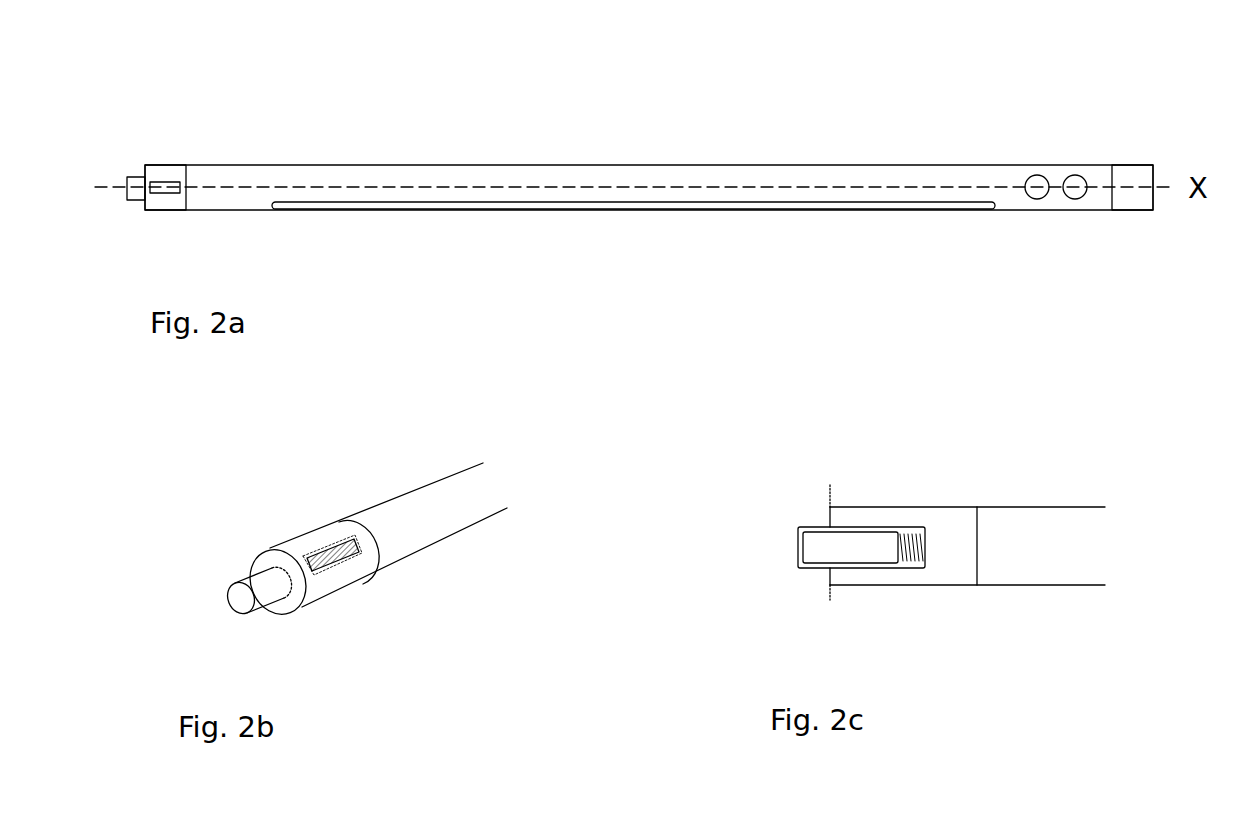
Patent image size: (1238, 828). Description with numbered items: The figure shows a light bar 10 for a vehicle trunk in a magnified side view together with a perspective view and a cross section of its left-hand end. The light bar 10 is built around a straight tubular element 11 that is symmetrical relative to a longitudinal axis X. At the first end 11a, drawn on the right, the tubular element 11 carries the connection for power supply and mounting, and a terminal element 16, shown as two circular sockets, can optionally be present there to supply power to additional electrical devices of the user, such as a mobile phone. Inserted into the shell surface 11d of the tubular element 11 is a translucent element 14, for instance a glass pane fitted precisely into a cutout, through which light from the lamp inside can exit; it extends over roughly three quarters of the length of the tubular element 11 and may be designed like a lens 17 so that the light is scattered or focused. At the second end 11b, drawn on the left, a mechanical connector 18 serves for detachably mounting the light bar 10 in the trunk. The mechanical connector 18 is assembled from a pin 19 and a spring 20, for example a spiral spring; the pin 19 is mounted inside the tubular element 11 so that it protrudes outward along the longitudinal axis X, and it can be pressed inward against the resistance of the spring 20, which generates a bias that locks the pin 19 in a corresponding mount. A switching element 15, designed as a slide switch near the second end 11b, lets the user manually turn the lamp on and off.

In FIG. 2A, the light bar 10 is at (777, 117).
In FIG. 2A, the tubular element 11 is at (462, 165).
In FIG. 2A, the first end of the tubular element 11a is at (1118, 152).
In FIG. 2A, the second end of the tubular element 11b is at (162, 145).
In FIG. 2B, the second end of the tubular element 11b is at (308, 500).
In FIG. 2C, the second end of the tubular element 11b is at (900, 480).
In FIG. 2A, the shell surface of the tubular element 11d is at (685, 177).
In FIG. 2A, the translucent element 14 is at (760, 220).
In FIG. 2A, the lens 17 is at (633, 205).
In FIG. 2A, the switching element 15 is at (172, 192).
In FIG. 2B, the switching element 15 is at (357, 553).
In FIG. 2A, the terminal element 16 is at (1040, 192).
In FIG. 2B, the mechanical connector 18 is at (252, 540).
In FIG. 2B, the pin 19 is at (265, 595).
In FIG. 2C, the pin 19 is at (832, 553).
In FIG. 2C, the spring 20 is at (913, 553).